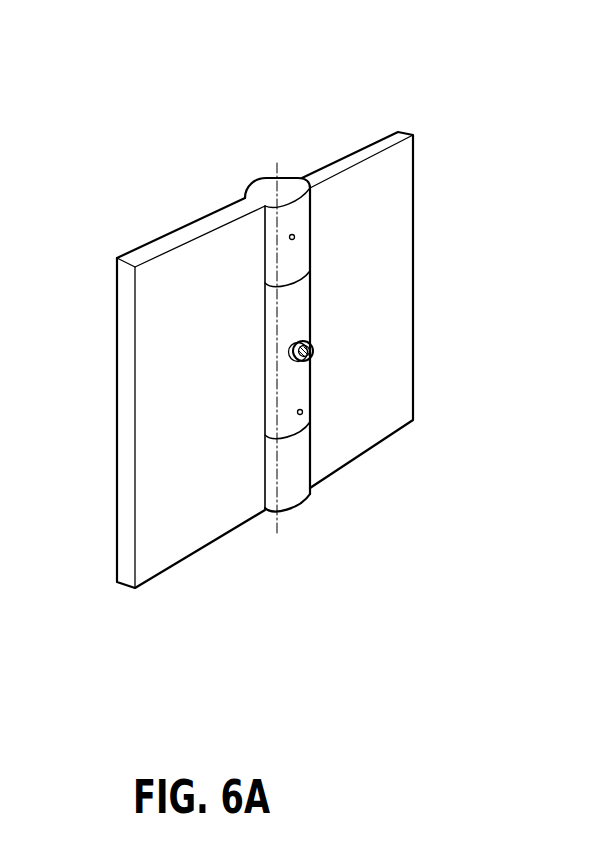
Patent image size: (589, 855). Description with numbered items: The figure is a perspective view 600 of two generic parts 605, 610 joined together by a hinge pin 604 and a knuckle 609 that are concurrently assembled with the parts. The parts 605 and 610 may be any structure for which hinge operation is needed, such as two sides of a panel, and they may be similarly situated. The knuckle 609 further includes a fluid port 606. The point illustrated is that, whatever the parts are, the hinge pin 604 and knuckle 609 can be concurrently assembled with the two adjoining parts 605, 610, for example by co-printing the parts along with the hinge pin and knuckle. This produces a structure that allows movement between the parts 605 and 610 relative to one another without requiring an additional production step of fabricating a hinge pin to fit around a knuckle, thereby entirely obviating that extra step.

The perspective view 600 is at (98, 110).
The hinge pin 604 is at (295, 236).
The part 605 is at (147, 252).
The fluid port 606 is at (313, 348).
The knuckle 609 is at (304, 414).
The part 610 is at (365, 150).